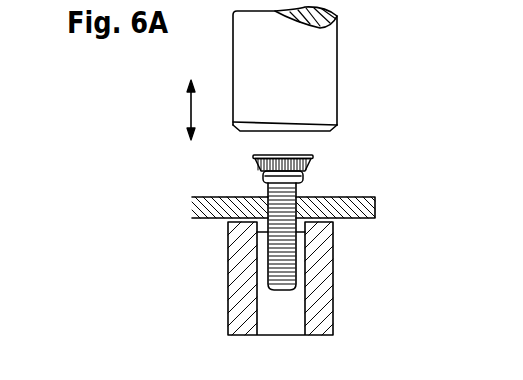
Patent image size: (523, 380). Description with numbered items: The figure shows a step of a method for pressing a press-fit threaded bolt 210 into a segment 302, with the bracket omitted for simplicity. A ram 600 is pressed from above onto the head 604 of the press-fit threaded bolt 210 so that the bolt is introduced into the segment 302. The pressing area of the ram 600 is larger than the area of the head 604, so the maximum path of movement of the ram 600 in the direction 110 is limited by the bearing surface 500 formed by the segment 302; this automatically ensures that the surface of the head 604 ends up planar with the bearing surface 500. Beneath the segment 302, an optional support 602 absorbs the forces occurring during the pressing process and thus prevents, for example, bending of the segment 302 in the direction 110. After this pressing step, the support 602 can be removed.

The ram 600 is at (327, 70).
The direction 110 is at (191, 109).
The head of the press-fit threaded bolt 604 is at (313, 165).
The bearing surface 500 is at (222, 196).
The segment 302 is at (360, 205).
The press-fit threaded bolt 210 is at (265, 262).
The support 602 is at (322, 313).